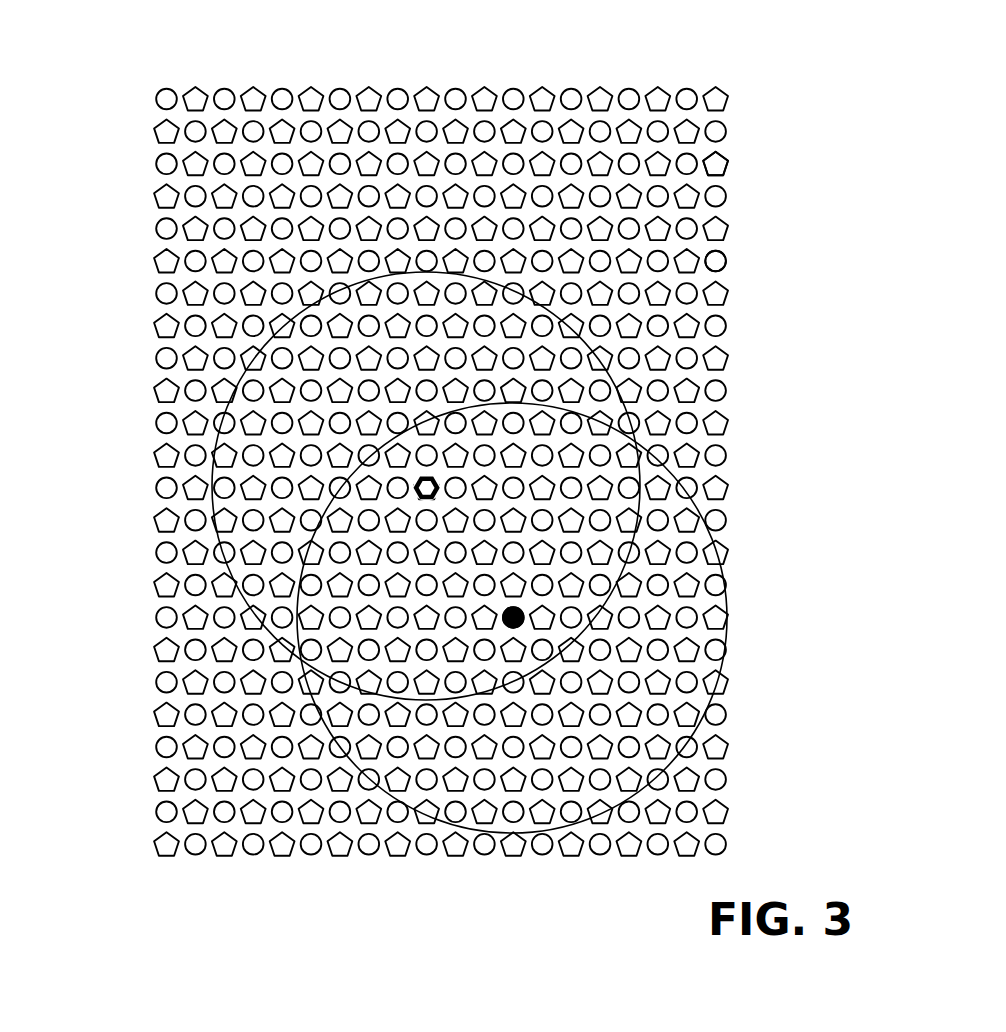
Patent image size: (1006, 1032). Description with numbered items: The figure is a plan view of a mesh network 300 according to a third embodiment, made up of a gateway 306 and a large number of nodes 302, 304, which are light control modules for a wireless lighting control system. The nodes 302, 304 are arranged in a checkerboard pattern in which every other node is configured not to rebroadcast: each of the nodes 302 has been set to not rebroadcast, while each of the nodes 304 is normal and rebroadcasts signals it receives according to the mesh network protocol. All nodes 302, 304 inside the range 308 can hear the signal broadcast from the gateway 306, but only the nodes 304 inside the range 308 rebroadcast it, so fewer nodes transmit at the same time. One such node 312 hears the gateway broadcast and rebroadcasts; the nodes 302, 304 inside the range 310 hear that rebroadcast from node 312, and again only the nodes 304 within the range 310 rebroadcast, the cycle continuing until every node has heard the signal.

The mesh network 300 is at (818, 62).
The nodes configured to not rebroadcast 302 is at (728, 164).
The normal nodes 304 is at (727, 262).
The gateway 306 is at (440, 487).
The range 308 is at (600, 412).
The range 310 is at (727, 662).
The node 312 is at (522, 618).